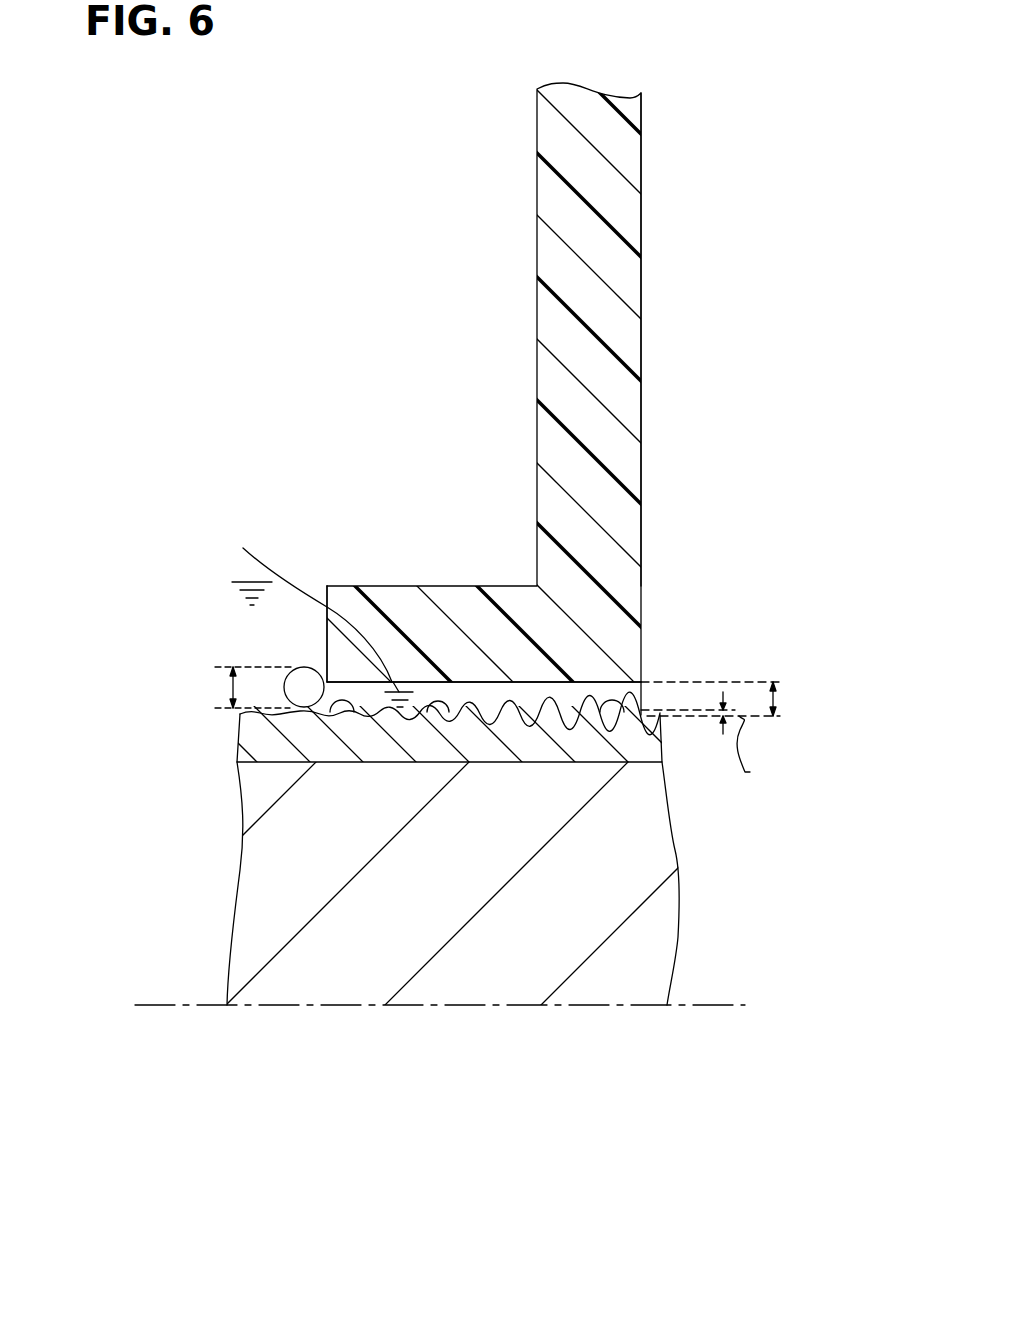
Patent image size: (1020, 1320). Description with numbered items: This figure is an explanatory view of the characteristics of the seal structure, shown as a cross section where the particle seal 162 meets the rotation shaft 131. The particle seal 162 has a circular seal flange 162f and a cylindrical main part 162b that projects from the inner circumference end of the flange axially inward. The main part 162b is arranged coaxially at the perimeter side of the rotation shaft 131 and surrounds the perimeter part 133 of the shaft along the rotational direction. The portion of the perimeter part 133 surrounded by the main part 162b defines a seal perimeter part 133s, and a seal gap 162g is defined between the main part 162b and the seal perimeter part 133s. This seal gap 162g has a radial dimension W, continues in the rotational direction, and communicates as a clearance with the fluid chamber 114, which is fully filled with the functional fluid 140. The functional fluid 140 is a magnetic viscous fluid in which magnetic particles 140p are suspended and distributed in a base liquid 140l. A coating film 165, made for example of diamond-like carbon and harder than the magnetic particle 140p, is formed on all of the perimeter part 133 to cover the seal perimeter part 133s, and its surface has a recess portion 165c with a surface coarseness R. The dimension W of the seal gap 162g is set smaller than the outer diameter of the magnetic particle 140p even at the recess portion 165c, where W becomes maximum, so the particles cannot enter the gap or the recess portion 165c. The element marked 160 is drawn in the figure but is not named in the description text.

The fluid chamber 114 is at (294, 428).
The reflector 160 is at (510, 397).
The particle seal 162 is at (742, 435).
The seal flange 162f is at (622, 440).
The main part 162b is at (528, 620).
The seal gap 162g is at (463, 697).
The functional fluid 140 is at (300, 801).
The base liquid 140l is at (252, 582).
The magnetic particle 140p is at (304, 687).
The perimeter part 133 is at (448, 881).
The seal perimeter part 133s is at (438, 712).
The coating film 165 is at (387, 747).
The recess portion 165c is at (348, 712).
The rotation shaft 131 is at (652, 840).